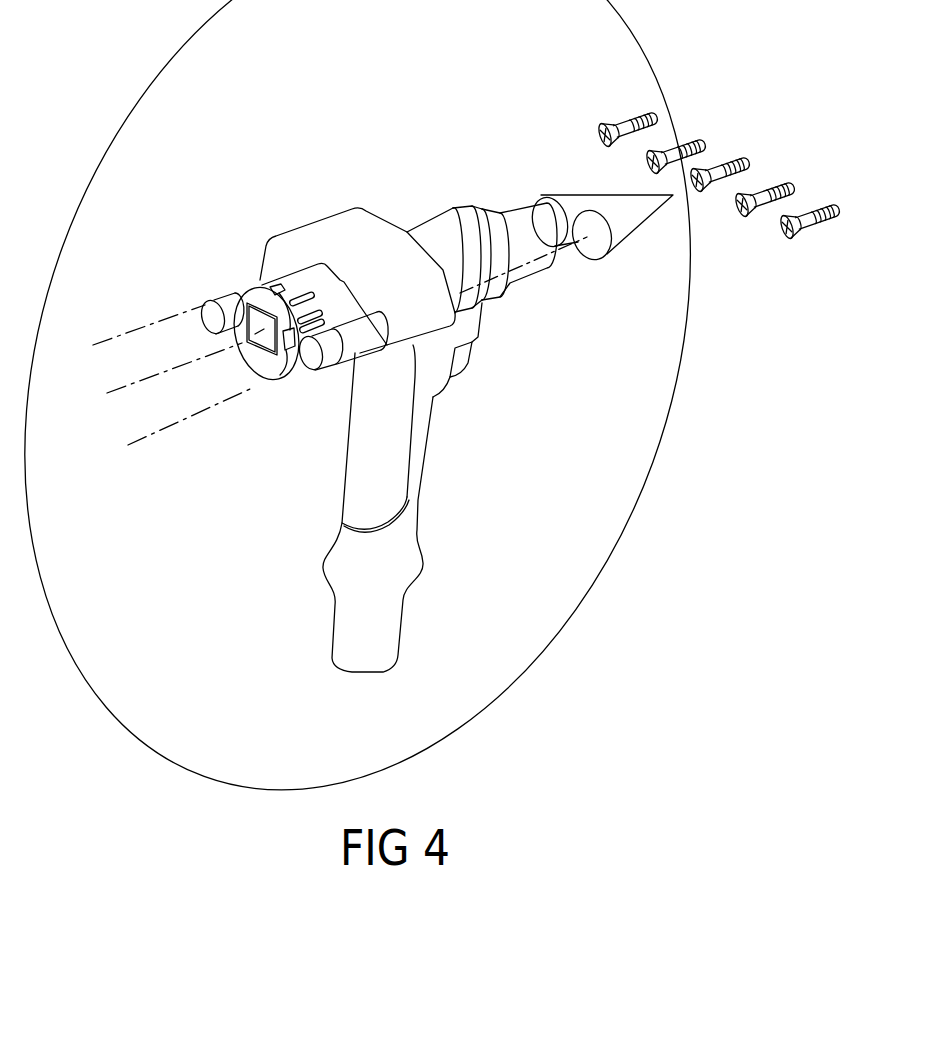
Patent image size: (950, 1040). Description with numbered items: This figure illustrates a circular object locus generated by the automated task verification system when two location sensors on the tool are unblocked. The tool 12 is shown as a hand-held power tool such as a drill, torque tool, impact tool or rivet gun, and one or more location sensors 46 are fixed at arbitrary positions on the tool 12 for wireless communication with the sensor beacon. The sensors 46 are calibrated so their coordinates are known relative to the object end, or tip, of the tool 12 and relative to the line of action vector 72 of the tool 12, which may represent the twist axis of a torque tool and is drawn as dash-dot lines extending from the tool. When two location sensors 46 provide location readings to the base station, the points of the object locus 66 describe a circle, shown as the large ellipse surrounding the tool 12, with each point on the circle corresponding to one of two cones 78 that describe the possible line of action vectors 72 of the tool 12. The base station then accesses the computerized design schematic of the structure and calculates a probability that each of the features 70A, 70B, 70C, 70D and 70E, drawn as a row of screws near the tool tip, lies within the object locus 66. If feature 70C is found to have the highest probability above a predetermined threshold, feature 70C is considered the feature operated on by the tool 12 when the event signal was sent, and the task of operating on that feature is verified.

The tool 12 is at (352, 464).
The location sensor 46 is at (213, 315).
The object locus 66 is at (570, 623).
The feature 70A is at (838, 208).
The feature 70B is at (797, 187).
The feature 70C is at (752, 162).
The feature 70D is at (707, 145).
The feature 70E is at (660, 108).
The line of action vector 72 is at (148, 377).
The cone 78 is at (580, 203).